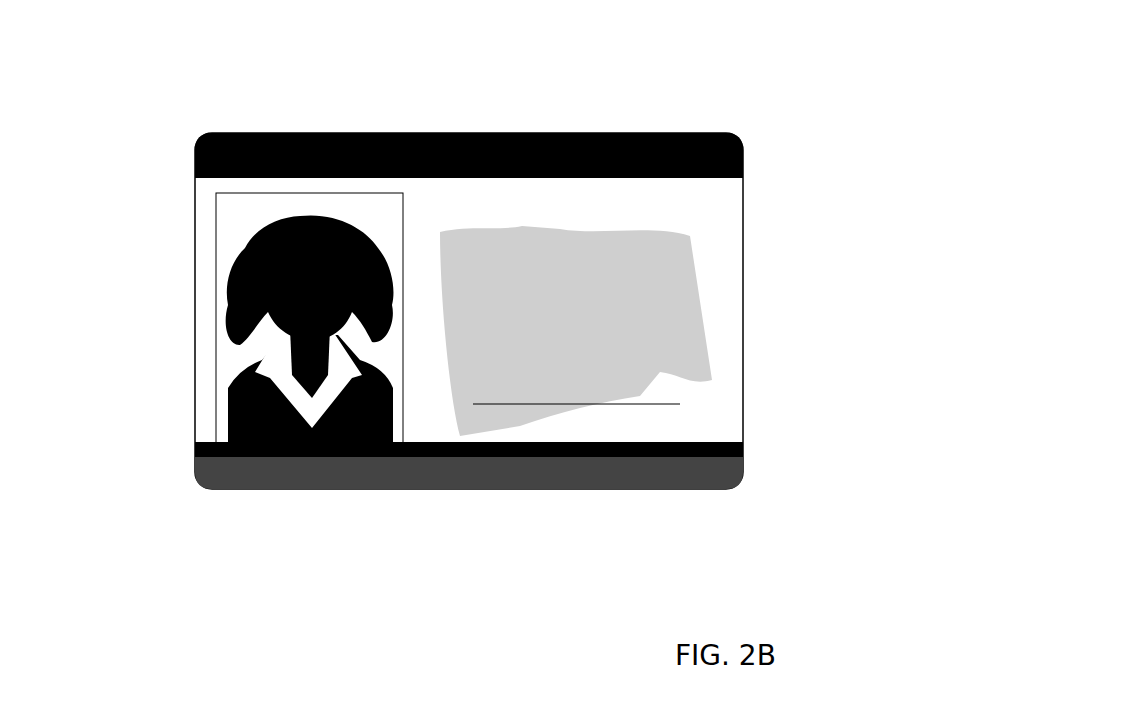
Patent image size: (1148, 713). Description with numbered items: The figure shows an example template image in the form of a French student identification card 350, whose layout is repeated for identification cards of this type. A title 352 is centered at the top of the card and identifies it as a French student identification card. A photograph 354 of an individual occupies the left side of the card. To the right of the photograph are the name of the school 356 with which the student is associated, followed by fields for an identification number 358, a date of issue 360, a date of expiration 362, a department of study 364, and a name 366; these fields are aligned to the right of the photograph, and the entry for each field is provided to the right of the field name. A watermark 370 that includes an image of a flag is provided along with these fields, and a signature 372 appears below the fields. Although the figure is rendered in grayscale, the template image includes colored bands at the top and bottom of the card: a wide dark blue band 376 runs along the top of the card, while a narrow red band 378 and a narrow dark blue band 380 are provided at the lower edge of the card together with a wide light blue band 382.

The French student identification card 350 is at (797, 545).
The title 352 is at (462, 133).
The photograph 354 is at (228, 233).
The name of the school 356 is at (577, 193).
The identification number field 358 is at (432, 234).
The date of issue field 360 is at (428, 258).
The date of expiration field 362 is at (432, 287).
The department of study field 364 is at (433, 313).
The name field 366 is at (468, 348).
The watermark 370 is at (700, 372).
The signature 372 is at (575, 382).
The wide dark blue band 376 is at (273, 133).
The narrow red band 378 is at (743, 443).
The narrow dark blue band 380 is at (728, 460).
The wide light blue band 382 is at (510, 477).